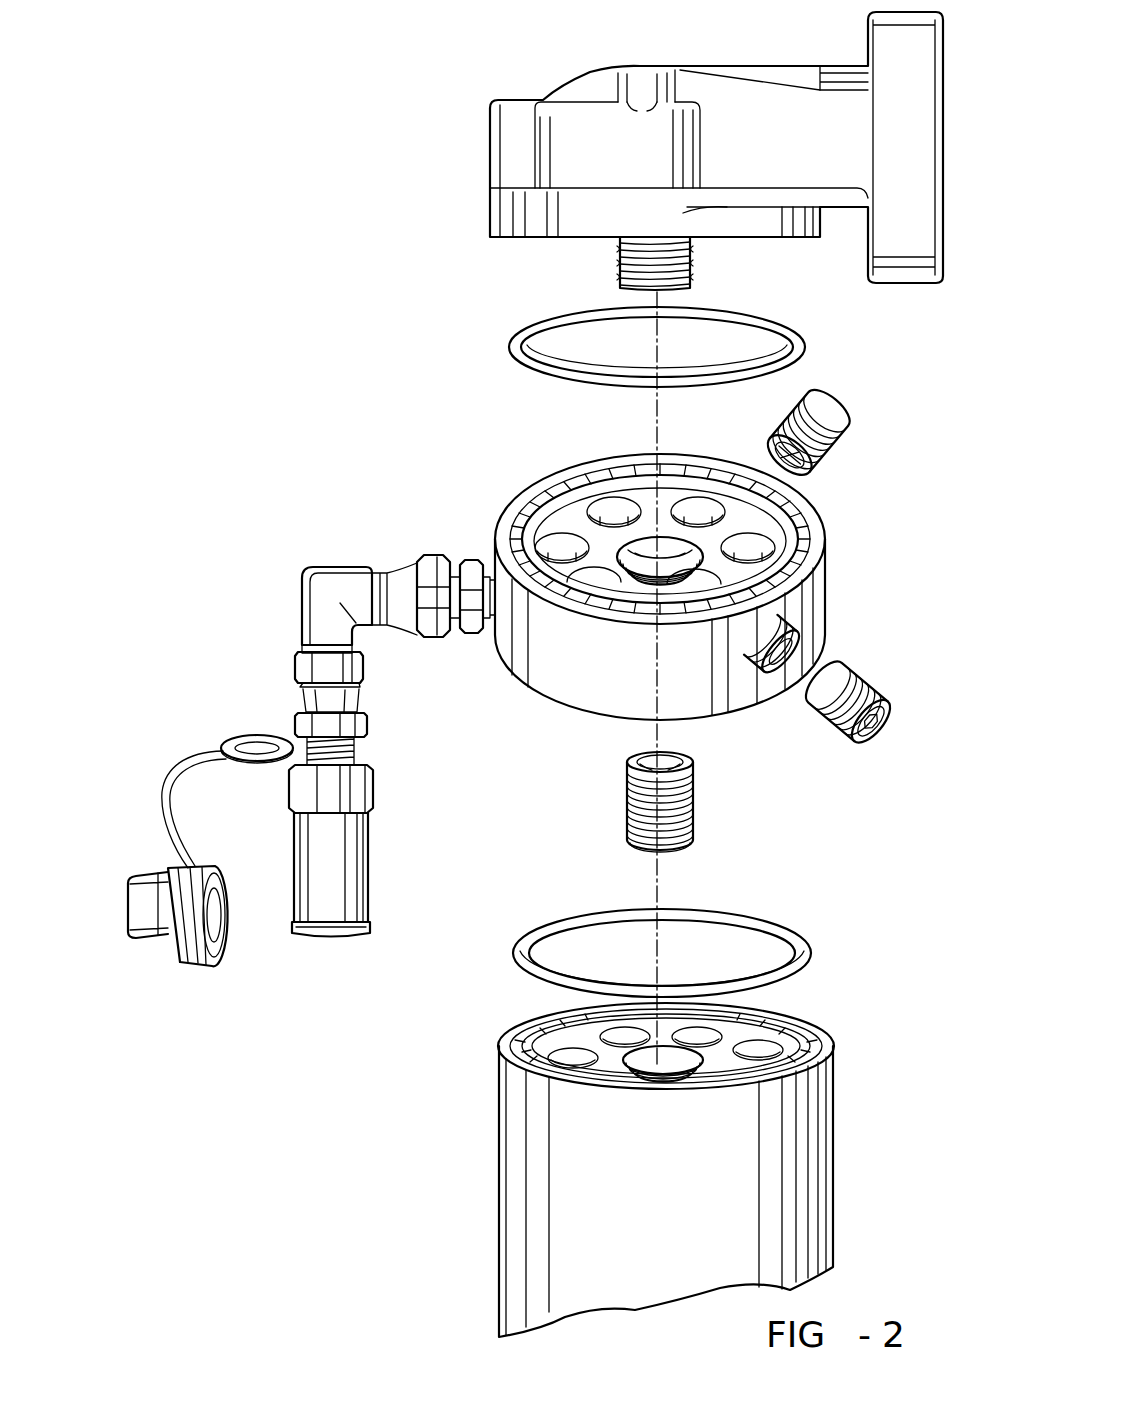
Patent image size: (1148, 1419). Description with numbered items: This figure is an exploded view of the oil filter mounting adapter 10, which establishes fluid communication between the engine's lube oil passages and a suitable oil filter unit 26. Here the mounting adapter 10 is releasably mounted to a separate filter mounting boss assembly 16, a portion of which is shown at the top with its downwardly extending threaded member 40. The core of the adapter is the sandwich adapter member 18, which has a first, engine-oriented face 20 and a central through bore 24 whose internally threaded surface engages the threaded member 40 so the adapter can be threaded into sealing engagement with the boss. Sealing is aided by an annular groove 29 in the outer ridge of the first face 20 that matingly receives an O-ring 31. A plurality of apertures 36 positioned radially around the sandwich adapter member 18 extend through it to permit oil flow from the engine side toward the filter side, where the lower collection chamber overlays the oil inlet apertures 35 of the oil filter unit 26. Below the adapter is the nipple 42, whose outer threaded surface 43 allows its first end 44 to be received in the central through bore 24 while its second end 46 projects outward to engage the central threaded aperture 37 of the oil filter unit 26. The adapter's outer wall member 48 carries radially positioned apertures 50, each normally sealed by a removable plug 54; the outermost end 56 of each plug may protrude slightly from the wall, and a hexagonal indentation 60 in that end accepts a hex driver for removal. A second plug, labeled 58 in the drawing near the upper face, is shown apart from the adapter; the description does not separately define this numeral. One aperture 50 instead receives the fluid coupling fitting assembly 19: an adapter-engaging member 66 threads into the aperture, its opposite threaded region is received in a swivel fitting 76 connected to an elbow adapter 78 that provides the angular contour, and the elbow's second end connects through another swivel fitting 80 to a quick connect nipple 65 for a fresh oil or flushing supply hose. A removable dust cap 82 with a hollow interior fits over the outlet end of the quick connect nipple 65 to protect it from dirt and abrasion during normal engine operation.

The oil filter mounting adapter 10 is at (322, 391).
The filter mounting boss assembly 16 is at (640, 100).
The sandwich adapter member 18 is at (826, 595).
The fluid coupling fitting assembly 19 is at (278, 578).
The first, engine-oriented face 20 is at (815, 512).
The central through bore 24 is at (648, 555).
The oil filter unit 26 is at (500, 1177).
The annular groove 29 is at (540, 505).
The O-ring 31 is at (800, 340).
The oil inlet apertures 35 is at (640, 1052).
The apertures 36 is at (775, 560).
The central threaded aperture 37 is at (700, 1060).
The downwardly extending threaded member 40 is at (695, 265).
The nipple 42 is at (627, 800).
The outer threaded surface 43 is at (686, 765).
The first end 44 is at (627, 772).
The second end 46 is at (682, 838).
The outer wall member 48 is at (658, 681).
The apertures 50 is at (797, 640).
The removable plugs 54 is at (772, 446).
The outermost ends 56 is at (874, 690).
The threaded plug 58 is at (838, 458).
The hexagonal indentation 60 is at (858, 737).
The quick connect nipple 65 is at (368, 876).
The adapter-engaging member 66 is at (470, 562).
The swivel fitting 76 is at (395, 568).
The elbow adapter 78 is at (326, 568).
The swivel fitting 80 is at (295, 665).
The removable dust cap 82 is at (130, 900).